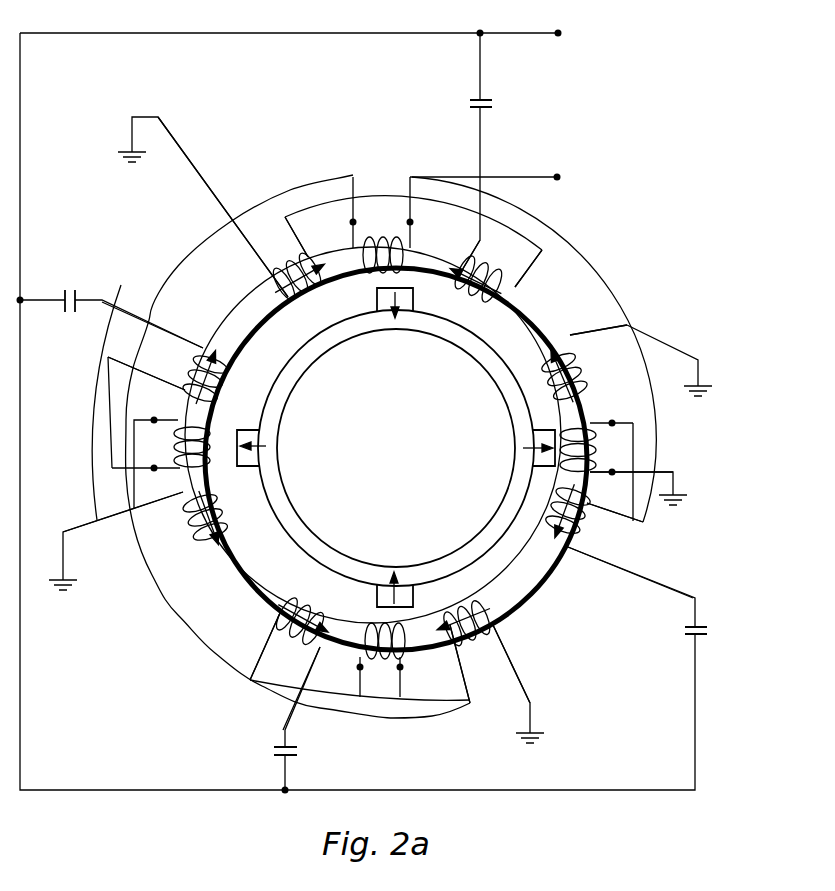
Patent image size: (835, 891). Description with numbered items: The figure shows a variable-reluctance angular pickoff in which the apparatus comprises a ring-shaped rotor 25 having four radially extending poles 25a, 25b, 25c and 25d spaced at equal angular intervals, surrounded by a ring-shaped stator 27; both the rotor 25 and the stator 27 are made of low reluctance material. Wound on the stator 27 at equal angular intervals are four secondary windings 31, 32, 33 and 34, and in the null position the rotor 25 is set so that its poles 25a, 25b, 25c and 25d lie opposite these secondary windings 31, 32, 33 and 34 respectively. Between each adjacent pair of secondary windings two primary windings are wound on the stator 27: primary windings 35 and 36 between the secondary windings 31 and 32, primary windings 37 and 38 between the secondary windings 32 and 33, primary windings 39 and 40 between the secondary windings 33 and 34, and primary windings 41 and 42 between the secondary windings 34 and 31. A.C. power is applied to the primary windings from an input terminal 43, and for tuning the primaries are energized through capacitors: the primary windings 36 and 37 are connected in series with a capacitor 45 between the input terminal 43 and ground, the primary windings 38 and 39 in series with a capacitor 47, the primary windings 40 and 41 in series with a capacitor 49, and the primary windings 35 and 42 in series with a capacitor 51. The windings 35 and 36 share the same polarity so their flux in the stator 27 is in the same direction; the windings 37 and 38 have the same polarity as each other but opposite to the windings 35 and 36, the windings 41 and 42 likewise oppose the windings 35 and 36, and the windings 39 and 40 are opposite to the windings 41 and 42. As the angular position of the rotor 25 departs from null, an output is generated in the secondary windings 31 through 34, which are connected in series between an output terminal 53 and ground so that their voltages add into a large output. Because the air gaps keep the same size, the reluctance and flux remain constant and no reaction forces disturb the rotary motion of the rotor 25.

The ring-shaped rotor 25 is at (456, 556).
The radially extending pole 25a is at (416, 604).
The radially extending pole 25b is at (248, 468).
The radially extending pole 25c is at (416, 304).
The radially extending pole 25d is at (587, 403).
The ring-shaped stator 27 is at (518, 598).
The secondary winding 31 is at (363, 617).
The secondary winding 32 is at (210, 427).
The secondary winding 33 is at (366, 275).
The secondary winding 34 is at (596, 440).
The primary winding 35 is at (294, 602).
The primary winding 36 is at (222, 520).
The primary winding 37 is at (233, 365).
The primary winding 38 is at (312, 291).
The primary winding 39 is at (490, 305).
The primary winding 40 is at (548, 342).
The primary winding 41 is at (542, 527).
The primary winding 42 is at (474, 597).
The input terminal 43 is at (556, 37).
The capacitor 45 is at (42, 303).
The capacitor 47 is at (470, 104).
The capacitor 49 is at (706, 625).
The capacitor 51 is at (289, 752).
The output terminal 53 is at (556, 181).